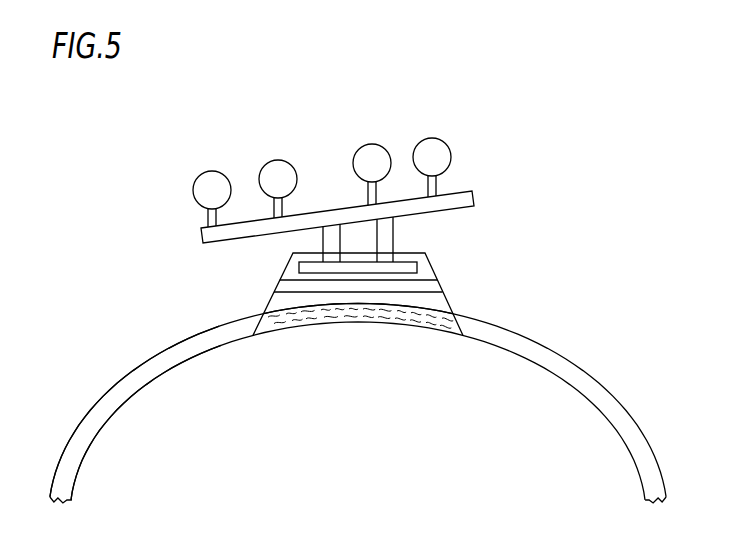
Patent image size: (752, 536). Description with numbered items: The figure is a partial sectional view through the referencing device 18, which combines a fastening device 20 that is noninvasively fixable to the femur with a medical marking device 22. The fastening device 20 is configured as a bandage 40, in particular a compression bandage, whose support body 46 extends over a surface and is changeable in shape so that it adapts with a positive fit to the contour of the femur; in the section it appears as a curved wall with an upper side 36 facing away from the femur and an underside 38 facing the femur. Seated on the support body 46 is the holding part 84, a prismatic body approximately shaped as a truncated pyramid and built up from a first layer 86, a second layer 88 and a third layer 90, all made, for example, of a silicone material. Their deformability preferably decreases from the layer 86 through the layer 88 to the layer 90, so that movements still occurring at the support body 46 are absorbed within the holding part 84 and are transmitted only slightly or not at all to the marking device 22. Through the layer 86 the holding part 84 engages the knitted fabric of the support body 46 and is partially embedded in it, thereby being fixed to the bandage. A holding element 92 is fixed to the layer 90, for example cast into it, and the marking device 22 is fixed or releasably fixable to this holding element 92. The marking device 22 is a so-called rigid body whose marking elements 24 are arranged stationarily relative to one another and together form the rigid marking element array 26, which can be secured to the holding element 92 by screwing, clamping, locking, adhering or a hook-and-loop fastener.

The referencing device 18 is at (416, 176).
The fastening device 20 is at (375, 388).
The medical marking device 22 is at (457, 177).
The marking elements 24 is at (275, 180).
The marking element array 26 is at (369, 112).
The upper side 36 is at (145, 363).
The underside 38 is at (190, 363).
The bandage 40 is at (617, 367).
The support body 46 is at (515, 346).
The holding part 84 is at (355, 270).
The first layer 86 is at (448, 304).
The second layer 88 is at (440, 283).
The third layer 90 is at (427, 258).
The holding element 92 is at (362, 268).